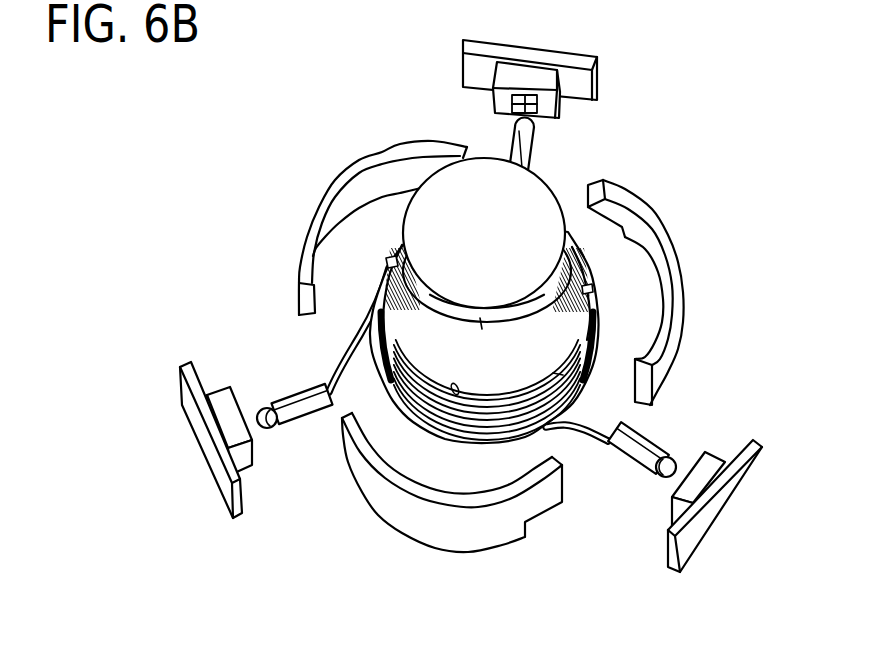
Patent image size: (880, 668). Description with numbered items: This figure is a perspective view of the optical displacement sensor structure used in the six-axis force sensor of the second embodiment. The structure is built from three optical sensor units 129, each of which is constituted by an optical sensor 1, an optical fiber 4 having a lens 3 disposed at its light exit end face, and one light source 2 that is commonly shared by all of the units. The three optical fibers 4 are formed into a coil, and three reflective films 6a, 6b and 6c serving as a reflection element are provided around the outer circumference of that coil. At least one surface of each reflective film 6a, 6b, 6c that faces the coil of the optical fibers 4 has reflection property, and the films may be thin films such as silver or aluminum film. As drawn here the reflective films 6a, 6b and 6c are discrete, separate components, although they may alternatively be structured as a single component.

The optical sensor 1 is at (537, 76).
The light source 2 is at (481, 320).
The lens 3 is at (527, 122).
The optical fiber 4 is at (523, 152).
The reflective film 6a is at (668, 353).
The reflective film 6b is at (400, 517).
The reflective film 6c is at (326, 184).
The optical sensor unit 129 is at (480, 291).